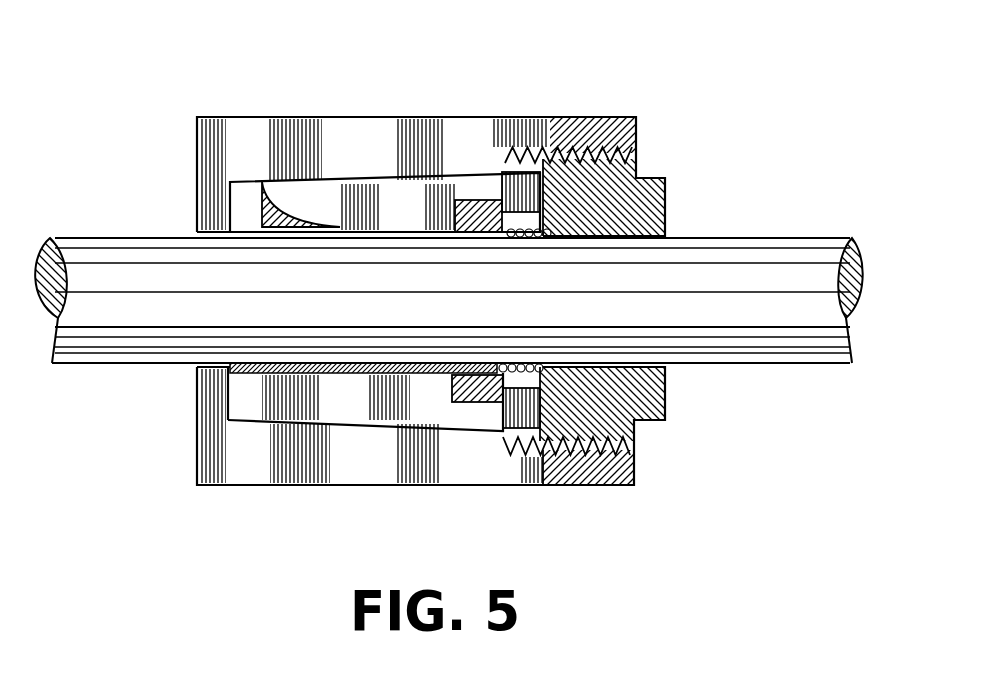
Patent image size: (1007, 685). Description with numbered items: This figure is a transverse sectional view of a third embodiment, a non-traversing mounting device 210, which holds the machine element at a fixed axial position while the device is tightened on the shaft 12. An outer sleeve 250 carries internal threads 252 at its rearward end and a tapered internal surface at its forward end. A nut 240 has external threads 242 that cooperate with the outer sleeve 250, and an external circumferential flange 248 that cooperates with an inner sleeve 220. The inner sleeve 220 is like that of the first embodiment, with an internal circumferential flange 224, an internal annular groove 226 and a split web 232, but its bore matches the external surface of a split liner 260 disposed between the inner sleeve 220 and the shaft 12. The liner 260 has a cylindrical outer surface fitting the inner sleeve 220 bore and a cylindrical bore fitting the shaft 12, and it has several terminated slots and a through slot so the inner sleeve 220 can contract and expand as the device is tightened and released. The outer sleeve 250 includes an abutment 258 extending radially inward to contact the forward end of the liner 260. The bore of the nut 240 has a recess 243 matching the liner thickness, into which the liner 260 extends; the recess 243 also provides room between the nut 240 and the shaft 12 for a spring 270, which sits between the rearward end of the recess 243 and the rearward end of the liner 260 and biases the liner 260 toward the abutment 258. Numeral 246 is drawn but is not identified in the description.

The shaft 12 is at (174, 250).
The non-traversing mounting device 210 is at (284, 104).
The inner sleeve 220 is at (349, 180).
The internal circumferential flange 224 is at (528, 117).
The internal annular groove 226 is at (493, 172).
The split web 232 is at (262, 196).
The nut 240 is at (660, 392).
The external threads 242 is at (635, 423).
The recess 243 is at (546, 364).
The spring 246 is at (520, 237).
The external circumferential flange 248 is at (473, 215).
The outer sleeve 250 is at (330, 486).
The internal threads 252 is at (592, 481).
The abutment 258 is at (205, 403).
The split liner 260 is at (338, 363).
The spring 270 is at (503, 370).